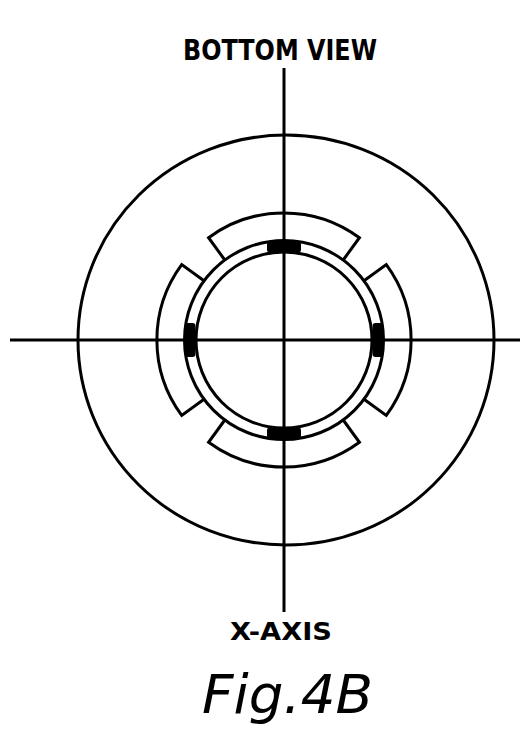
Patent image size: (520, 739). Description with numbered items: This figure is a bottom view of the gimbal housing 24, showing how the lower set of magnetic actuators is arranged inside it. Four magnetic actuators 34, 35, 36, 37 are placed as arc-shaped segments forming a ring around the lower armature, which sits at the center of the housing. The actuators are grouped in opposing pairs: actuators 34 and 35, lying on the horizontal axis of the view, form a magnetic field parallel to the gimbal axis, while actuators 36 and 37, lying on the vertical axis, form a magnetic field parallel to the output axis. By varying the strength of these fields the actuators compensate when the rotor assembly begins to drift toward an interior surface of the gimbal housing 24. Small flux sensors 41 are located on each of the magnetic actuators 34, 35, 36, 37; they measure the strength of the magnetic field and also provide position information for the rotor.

The gimbal housing 24 is at (415, 177).
The magnetic actuator 34 is at (163, 375).
The magnetic actuator 35 is at (393, 407).
The magnetic actuator 36 is at (260, 467).
The magnetic actuator 37 is at (307, 215).
The flux sensors 41 is at (268, 245).